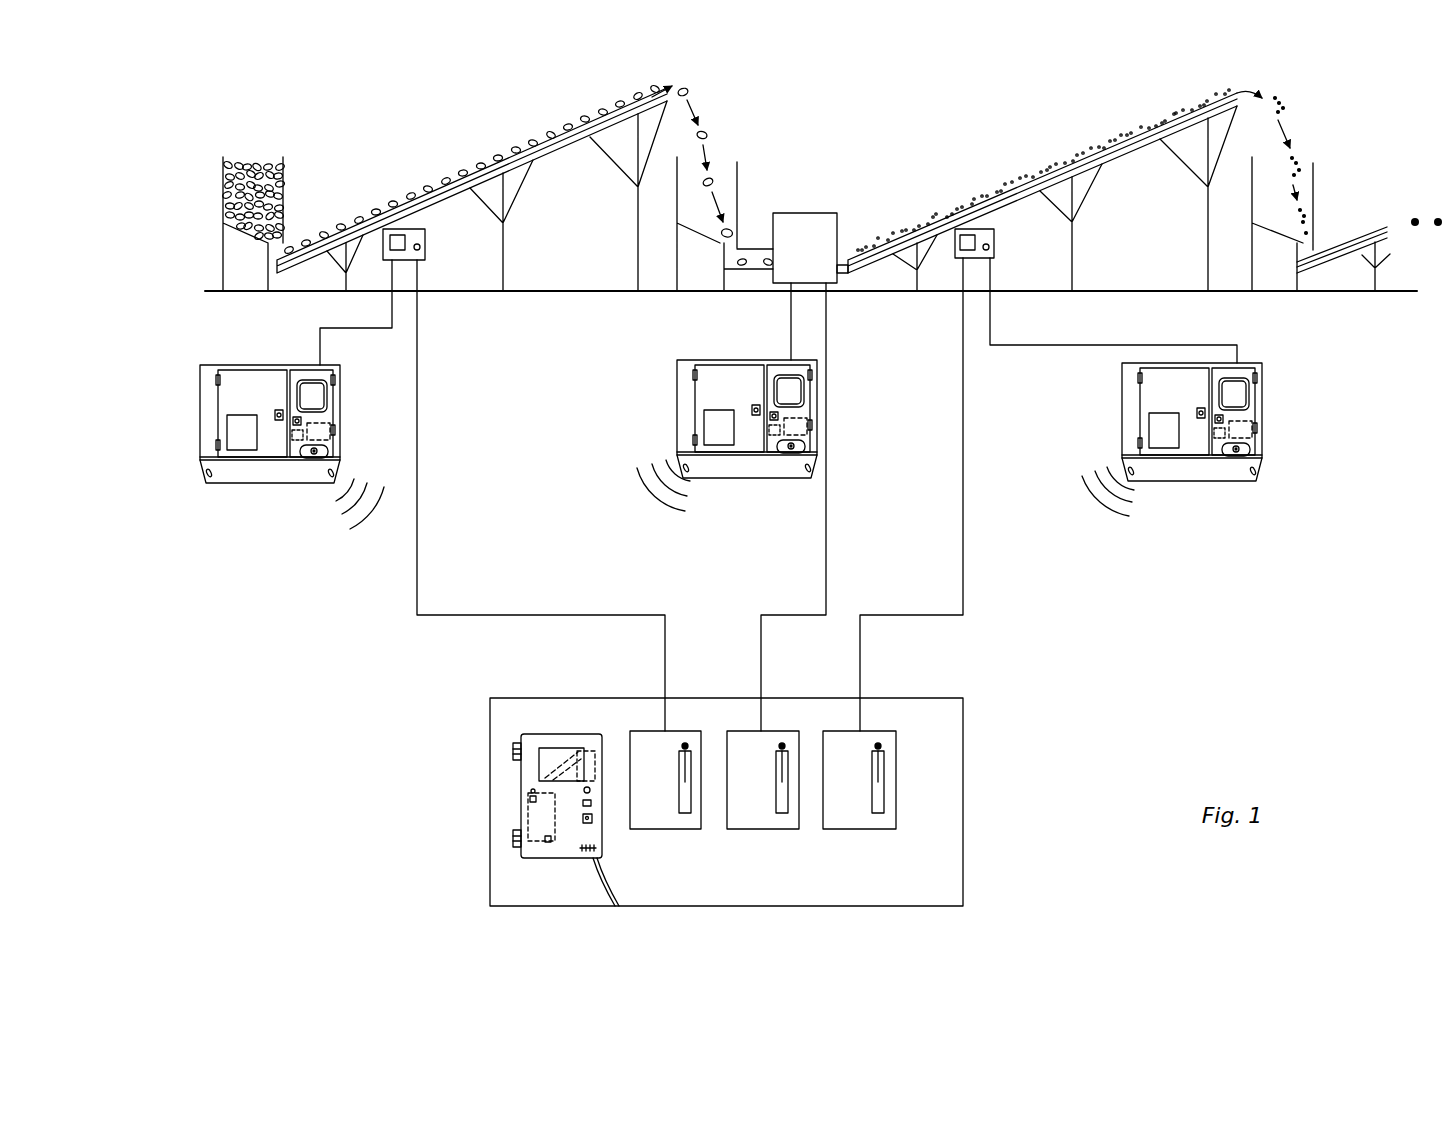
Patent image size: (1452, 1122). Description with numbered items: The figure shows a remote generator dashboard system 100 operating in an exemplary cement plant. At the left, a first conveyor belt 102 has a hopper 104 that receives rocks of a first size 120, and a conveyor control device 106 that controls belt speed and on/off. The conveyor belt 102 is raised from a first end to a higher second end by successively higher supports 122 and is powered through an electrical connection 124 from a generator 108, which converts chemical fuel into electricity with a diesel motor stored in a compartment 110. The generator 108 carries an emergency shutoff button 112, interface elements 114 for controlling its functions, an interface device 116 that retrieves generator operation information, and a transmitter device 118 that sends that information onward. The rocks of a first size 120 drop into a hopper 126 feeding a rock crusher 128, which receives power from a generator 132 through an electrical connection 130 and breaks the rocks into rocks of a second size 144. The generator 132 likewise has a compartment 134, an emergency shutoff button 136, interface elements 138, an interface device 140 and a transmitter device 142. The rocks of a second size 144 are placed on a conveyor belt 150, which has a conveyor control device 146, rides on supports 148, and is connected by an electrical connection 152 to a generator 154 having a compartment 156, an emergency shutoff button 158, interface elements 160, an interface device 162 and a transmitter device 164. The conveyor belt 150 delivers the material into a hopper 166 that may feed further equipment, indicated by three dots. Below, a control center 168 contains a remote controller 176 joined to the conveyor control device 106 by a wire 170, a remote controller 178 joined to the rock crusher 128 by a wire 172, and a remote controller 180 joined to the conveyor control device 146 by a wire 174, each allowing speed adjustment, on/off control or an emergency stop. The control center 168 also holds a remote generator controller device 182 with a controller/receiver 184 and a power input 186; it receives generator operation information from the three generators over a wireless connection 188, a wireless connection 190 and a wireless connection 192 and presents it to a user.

The remote generator dashboard system 100 is at (1252, 724).
The first conveyor belt 102 is at (563, 140).
The hopper 104 is at (280, 177).
The conveyor control device 106 is at (425, 250).
The generator 108 is at (200, 377).
The compartment 110 is at (230, 395).
The emergency shutoff button 112 is at (317, 455).
The interface elements 114 is at (313, 398).
The interface device 116 is at (322, 423).
The transmitter device 118 is at (298, 438).
The rocks of a first size 120 is at (430, 185).
The supports 122 is at (333, 270).
The electrical connection 124 is at (320, 340).
The hopper 126 is at (738, 178).
The rock crusher 128 is at (795, 227).
The electrical connection 130 is at (790, 320).
The generator 132 is at (683, 382).
The compartment 134 is at (713, 393).
The emergency shutoff button 136 is at (790, 450).
The interface elements 138 is at (793, 392).
The interface device 140 is at (800, 417).
The transmitter device 142 is at (770, 438).
The rocks of a second size 144 is at (958, 207).
The conveyor control device 146 is at (994, 236).
The supports 148 is at (913, 262).
The conveyor belt 150 is at (1018, 187).
The electrical connection 152 is at (1027, 347).
The generator 154 is at (1128, 380).
The compartment 156 is at (1160, 398).
The emergency shutoff button 158 is at (1253, 448).
The interface elements 160 is at (1235, 397).
The interface device 162 is at (1243, 420).
The transmitter device 164 is at (1218, 438).
The hopper 166 is at (1313, 180).
The control center 168 is at (963, 773).
The wire 170 is at (528, 617).
The wire 172 is at (792, 617).
The wire 174 is at (928, 617).
The remote controller 176 is at (653, 822).
The remote controller 178 is at (756, 822).
The remote controller 180 is at (846, 822).
The remote generator controller device 182 is at (521, 820).
The controller/receiver 184 is at (541, 762).
The power input 186 is at (595, 882).
The wireless connection 188 is at (353, 527).
The wireless connection 190 is at (650, 497).
The wireless connection 192 is at (1093, 500).